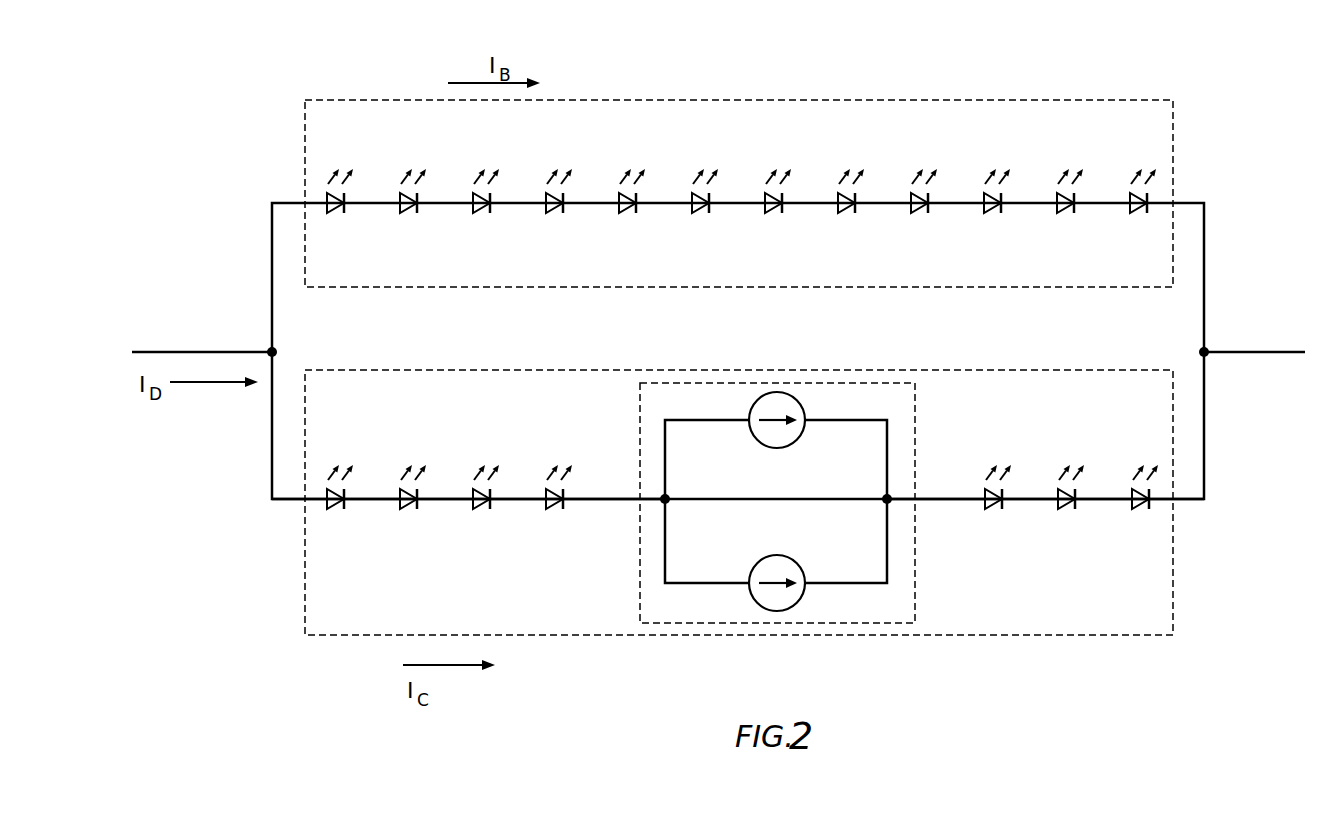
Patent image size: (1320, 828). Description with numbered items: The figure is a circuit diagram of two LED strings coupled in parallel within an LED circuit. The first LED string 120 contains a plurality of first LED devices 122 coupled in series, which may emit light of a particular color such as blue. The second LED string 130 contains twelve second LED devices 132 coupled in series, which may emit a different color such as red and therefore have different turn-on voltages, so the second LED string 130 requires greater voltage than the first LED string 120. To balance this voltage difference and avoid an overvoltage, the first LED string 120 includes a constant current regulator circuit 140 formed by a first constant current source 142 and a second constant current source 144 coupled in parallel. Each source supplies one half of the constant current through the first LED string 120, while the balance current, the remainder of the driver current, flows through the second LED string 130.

The first LED string 120 is at (739, 544).
The first LED devices 122 is at (405, 510).
The second LED string 130 is at (739, 160).
The second LED devices 132 is at (405, 213).
The constant current regulator circuit 140 is at (821, 503).
The first constant current source 142 is at (757, 448).
The second constant current source 144 is at (793, 557).